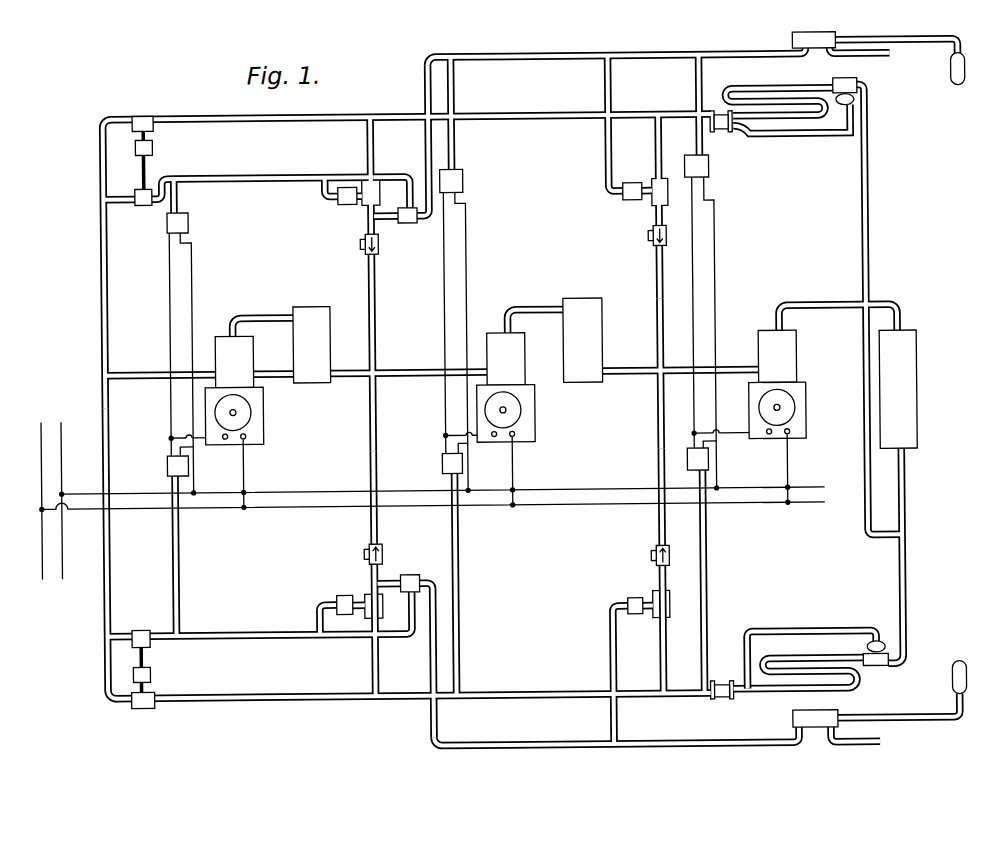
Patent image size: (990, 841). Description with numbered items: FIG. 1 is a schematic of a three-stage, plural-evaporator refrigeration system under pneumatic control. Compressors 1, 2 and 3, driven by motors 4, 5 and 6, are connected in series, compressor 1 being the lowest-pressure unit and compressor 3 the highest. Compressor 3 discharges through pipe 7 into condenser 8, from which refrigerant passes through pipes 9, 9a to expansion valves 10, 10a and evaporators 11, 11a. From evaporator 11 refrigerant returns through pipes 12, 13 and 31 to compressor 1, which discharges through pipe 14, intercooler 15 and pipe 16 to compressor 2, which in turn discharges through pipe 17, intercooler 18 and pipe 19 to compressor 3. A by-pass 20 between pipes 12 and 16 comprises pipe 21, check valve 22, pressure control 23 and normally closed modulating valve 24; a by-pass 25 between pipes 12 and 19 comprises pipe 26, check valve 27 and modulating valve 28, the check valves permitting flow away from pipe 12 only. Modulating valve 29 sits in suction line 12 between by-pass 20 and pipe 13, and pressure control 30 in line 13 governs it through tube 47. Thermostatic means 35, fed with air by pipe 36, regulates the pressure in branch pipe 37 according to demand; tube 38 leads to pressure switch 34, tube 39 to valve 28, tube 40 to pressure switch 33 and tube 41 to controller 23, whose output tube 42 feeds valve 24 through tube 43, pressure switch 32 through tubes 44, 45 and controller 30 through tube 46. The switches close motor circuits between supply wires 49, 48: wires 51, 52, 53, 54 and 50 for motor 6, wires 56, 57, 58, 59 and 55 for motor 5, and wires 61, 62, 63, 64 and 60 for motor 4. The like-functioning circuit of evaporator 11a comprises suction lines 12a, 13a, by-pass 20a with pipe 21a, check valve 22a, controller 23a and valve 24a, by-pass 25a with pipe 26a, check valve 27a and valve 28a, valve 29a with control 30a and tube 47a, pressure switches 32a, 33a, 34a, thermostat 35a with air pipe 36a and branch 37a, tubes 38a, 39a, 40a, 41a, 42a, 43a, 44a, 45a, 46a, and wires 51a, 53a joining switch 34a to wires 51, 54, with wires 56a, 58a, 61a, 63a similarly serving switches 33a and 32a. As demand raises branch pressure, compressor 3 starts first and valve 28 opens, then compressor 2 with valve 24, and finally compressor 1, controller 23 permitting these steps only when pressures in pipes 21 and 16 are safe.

The compressor 1 is at (240, 358).
The compressor 2 is at (510, 357).
The compressor 3 is at (782, 355).
The motor 4 is at (247, 415).
The motor 5 is at (517, 412).
The motor 6 is at (788, 406).
The pipe 7 is at (827, 302).
The condenser 8 is at (903, 372).
The pipe 9 is at (903, 502).
The pipe 9a is at (870, 250).
The expansion valve 10 is at (878, 665).
The expansion valve 10a is at (842, 80).
The evaporator 11 is at (800, 658).
The evaporator 11a is at (788, 87).
The pipe 12 is at (495, 693).
The pipe 12a is at (542, 115).
The pipe 13 is at (103, 598).
The pipe 13a is at (101, 272).
The pipe 14 is at (258, 314).
The intercooler 15 is at (313, 338).
The pipe 16 is at (405, 370).
The pipe 17 is at (530, 307).
The intercooler 18 is at (590, 317).
The pipe 19 is at (732, 368).
The by-pass 20 is at (365, 442).
The by-pass 20a is at (363, 293).
The pipe 21 is at (373, 525).
The pipe 21a is at (378, 322).
The check valve 22 is at (367, 552).
The check valve 22a is at (364, 243).
The pressure control 23 is at (410, 572).
The pressure controller 23a is at (410, 225).
The modulating valve 24 is at (347, 598).
The modulating valve 24a is at (347, 205).
The by-pass 25 is at (648, 442).
The by-pass 25a is at (658, 266).
The pipe 26 is at (657, 470).
The pipe 26a is at (660, 338).
The check valve 27 is at (653, 550).
The check valve 27a is at (653, 238).
The modulating valve 28 is at (637, 597).
The modulating valve 28a is at (635, 200).
The modulating valve 29 is at (149, 673).
The modulating valve 29a is at (156, 143).
The pressure control 30 is at (140, 630).
The pressure control 30a is at (145, 200).
The pipe 31 is at (140, 377).
The pressure switch 32 is at (168, 463).
The pressure switch 32a is at (190, 225).
The pressure switch 33 is at (444, 467).
The pressure switch 33a is at (462, 178).
The pressure switch 34 is at (700, 462).
The pressure switch 34a is at (710, 170).
The thermostatic means 35 is at (830, 711).
The thermostat 35a is at (833, 32).
The pipe 36 is at (858, 740).
The pipe 36a is at (876, 57).
The branch control pipe 37 is at (675, 743).
The branch pipe 37a is at (567, 42).
The tube 38 is at (703, 588).
The tube 38a is at (700, 72).
The tube 39 is at (615, 713).
The tube 39a is at (606, 87).
The tube 40 is at (457, 655).
The tube 40a is at (452, 87).
The tube 41 is at (431, 718).
The tube 41a is at (427, 80).
The tube 42 is at (405, 633).
The tube 42a is at (402, 165).
The tube 43 is at (320, 615).
The tube 43a is at (327, 188).
The tube 44 is at (250, 637).
The tube 44a is at (282, 177).
The tube 45 is at (182, 565).
The tube 45a is at (187, 198).
The tube 46 is at (162, 638).
The tube 46a is at (167, 178).
The tube 47 is at (139, 655).
The tube 47a is at (148, 168).
The wire 48 is at (600, 506).
The wire 49 is at (580, 488).
The wire 50 is at (792, 462).
The wire 51 is at (720, 475).
The wire 51a is at (717, 273).
The wire 52 is at (715, 445).
The wire 53 is at (690, 438).
The wire 53a is at (697, 243).
The wire 54 is at (728, 432).
The wire 55 is at (513, 458).
The wire 56 is at (470, 468).
The relay lead 56a is at (468, 277).
The wire 57 is at (453, 447).
The wire 58 is at (445, 437).
The relay lead 58a is at (445, 293).
The wire 59 is at (462, 433).
The wire 60 is at (245, 460).
The wire 61 is at (190, 463).
The relay lead 61a is at (194, 278).
The wire 62 is at (173, 447).
The wire 63 is at (170, 437).
The relay lead 63a is at (170, 297).
The wire 64 is at (183, 432).